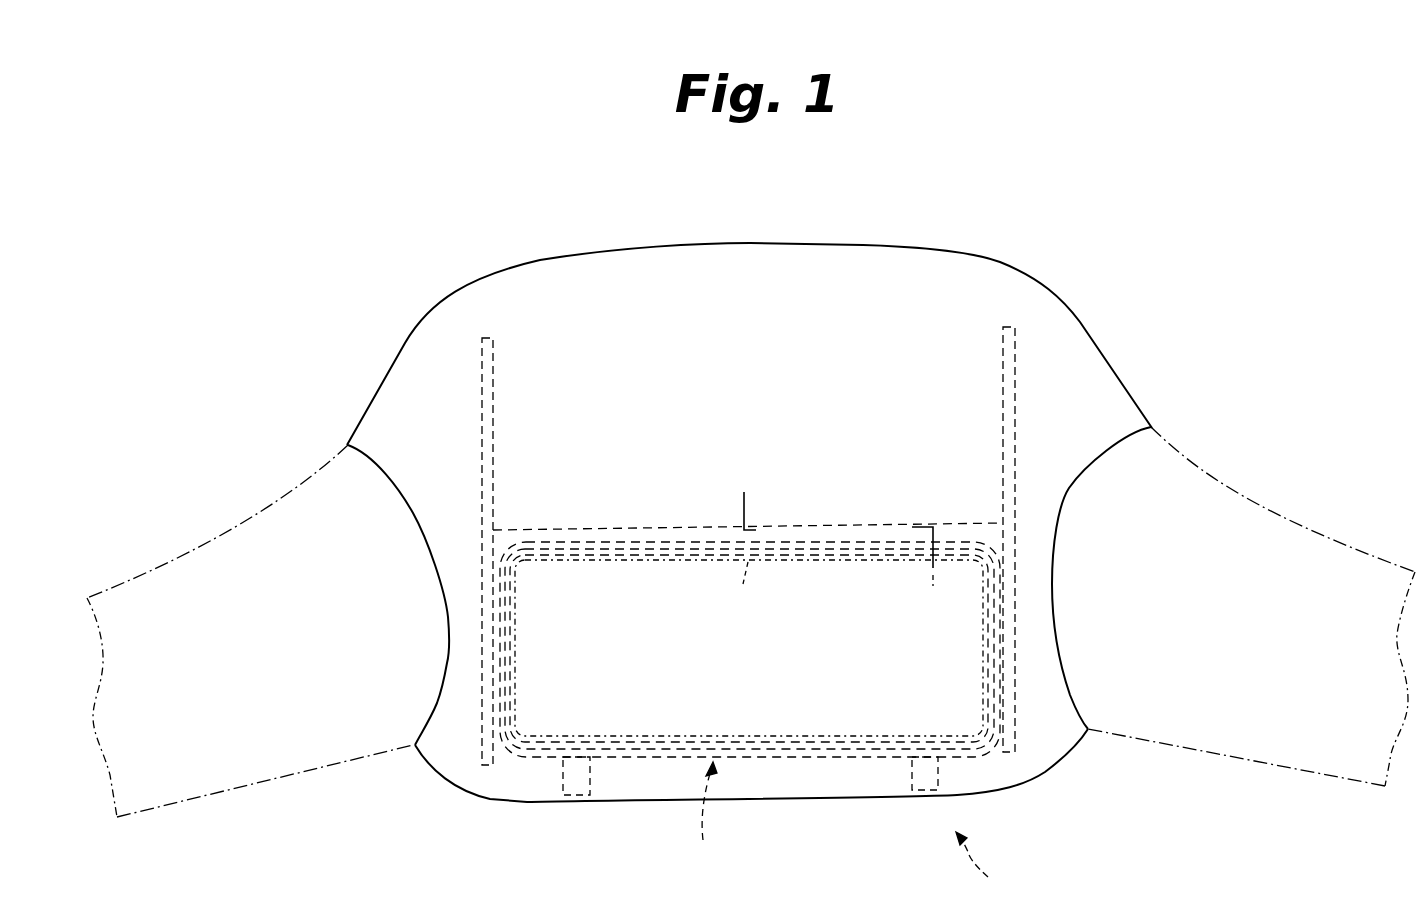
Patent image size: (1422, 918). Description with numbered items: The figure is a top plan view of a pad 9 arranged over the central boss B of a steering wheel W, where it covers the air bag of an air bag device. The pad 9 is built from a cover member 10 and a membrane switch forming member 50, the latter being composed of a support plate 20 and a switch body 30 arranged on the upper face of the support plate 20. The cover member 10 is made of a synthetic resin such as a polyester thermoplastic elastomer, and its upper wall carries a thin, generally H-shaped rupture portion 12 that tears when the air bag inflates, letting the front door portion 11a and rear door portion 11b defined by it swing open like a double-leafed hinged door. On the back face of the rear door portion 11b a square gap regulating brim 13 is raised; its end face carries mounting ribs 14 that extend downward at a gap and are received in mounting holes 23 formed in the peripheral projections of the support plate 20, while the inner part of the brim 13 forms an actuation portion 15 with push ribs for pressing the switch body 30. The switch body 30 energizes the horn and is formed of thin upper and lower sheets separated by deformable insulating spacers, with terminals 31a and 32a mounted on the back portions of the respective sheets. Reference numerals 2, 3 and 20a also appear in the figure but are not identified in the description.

The waist belt portions 2 is at (751, 596).
The section line 3 is at (739, 234).
The pad 9 is at (749, 526).
The cover member 10 is at (749, 526).
The front door portion 11a is at (545, 304).
The rear door portion 11b is at (540, 756).
The rupture portion 12 is at (482, 367).
The gap regulating brim 13 is at (864, 522).
The mounting ribs 14 is at (525, 617).
The actuation portion 15 is at (862, 733).
The support plate 20 is at (750, 649).
The pocket opening 20a is at (780, 550).
The mounting holes 23 is at (674, 565).
The switch body 30 is at (749, 700).
The terminal 31a is at (590, 777).
The terminal 32a is at (938, 777).
The membrane switch forming member 50 is at (705, 817).
The central boss B is at (980, 862).
The steering wheel W is at (1276, 455).